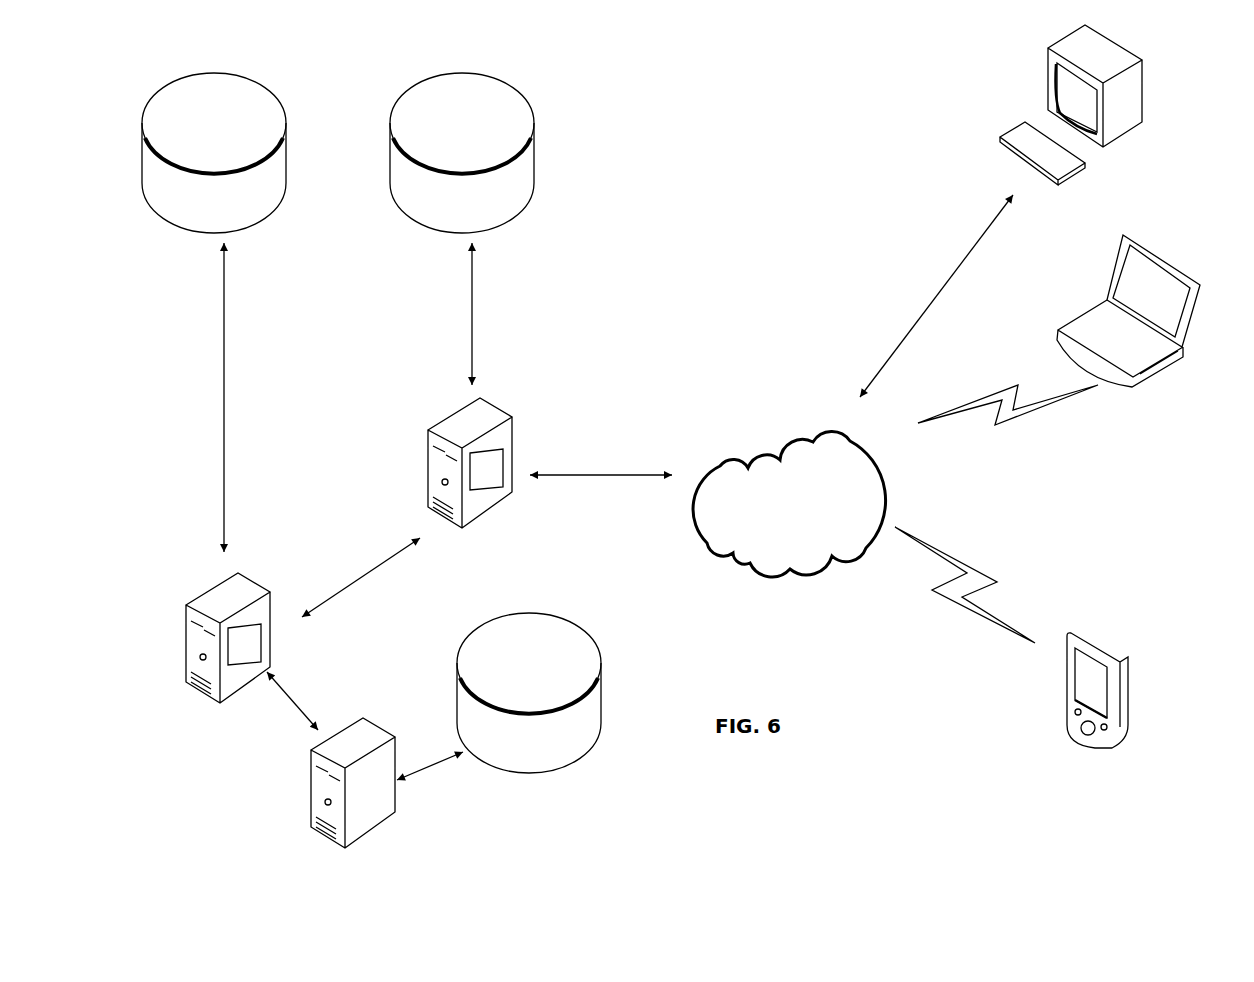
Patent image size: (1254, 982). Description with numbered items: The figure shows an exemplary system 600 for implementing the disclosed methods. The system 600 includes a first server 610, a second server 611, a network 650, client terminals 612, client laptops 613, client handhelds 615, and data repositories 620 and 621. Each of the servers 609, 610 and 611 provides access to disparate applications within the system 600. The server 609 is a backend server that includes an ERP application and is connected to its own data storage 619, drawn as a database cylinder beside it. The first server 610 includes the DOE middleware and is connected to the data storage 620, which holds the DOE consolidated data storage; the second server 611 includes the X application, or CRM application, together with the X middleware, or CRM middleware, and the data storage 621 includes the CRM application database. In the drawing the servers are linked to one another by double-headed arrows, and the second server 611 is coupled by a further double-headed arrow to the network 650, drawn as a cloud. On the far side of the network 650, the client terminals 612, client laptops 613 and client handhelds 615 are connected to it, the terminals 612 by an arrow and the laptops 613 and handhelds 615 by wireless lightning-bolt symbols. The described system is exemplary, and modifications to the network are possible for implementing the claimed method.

The exemplary system 600 is at (735, 208).
The server 609 is at (377, 788).
The first server 610 is at (251, 616).
The second server 611 is at (506, 463).
The client terminals 612 is at (1062, 105).
The client laptops 613 is at (1131, 319).
The client handhelds 615 is at (1125, 681).
The data storage 619 is at (529, 693).
The data repository 620 is at (238, 173).
The data repository 621 is at (487, 154).
The network 650 is at (789, 504).